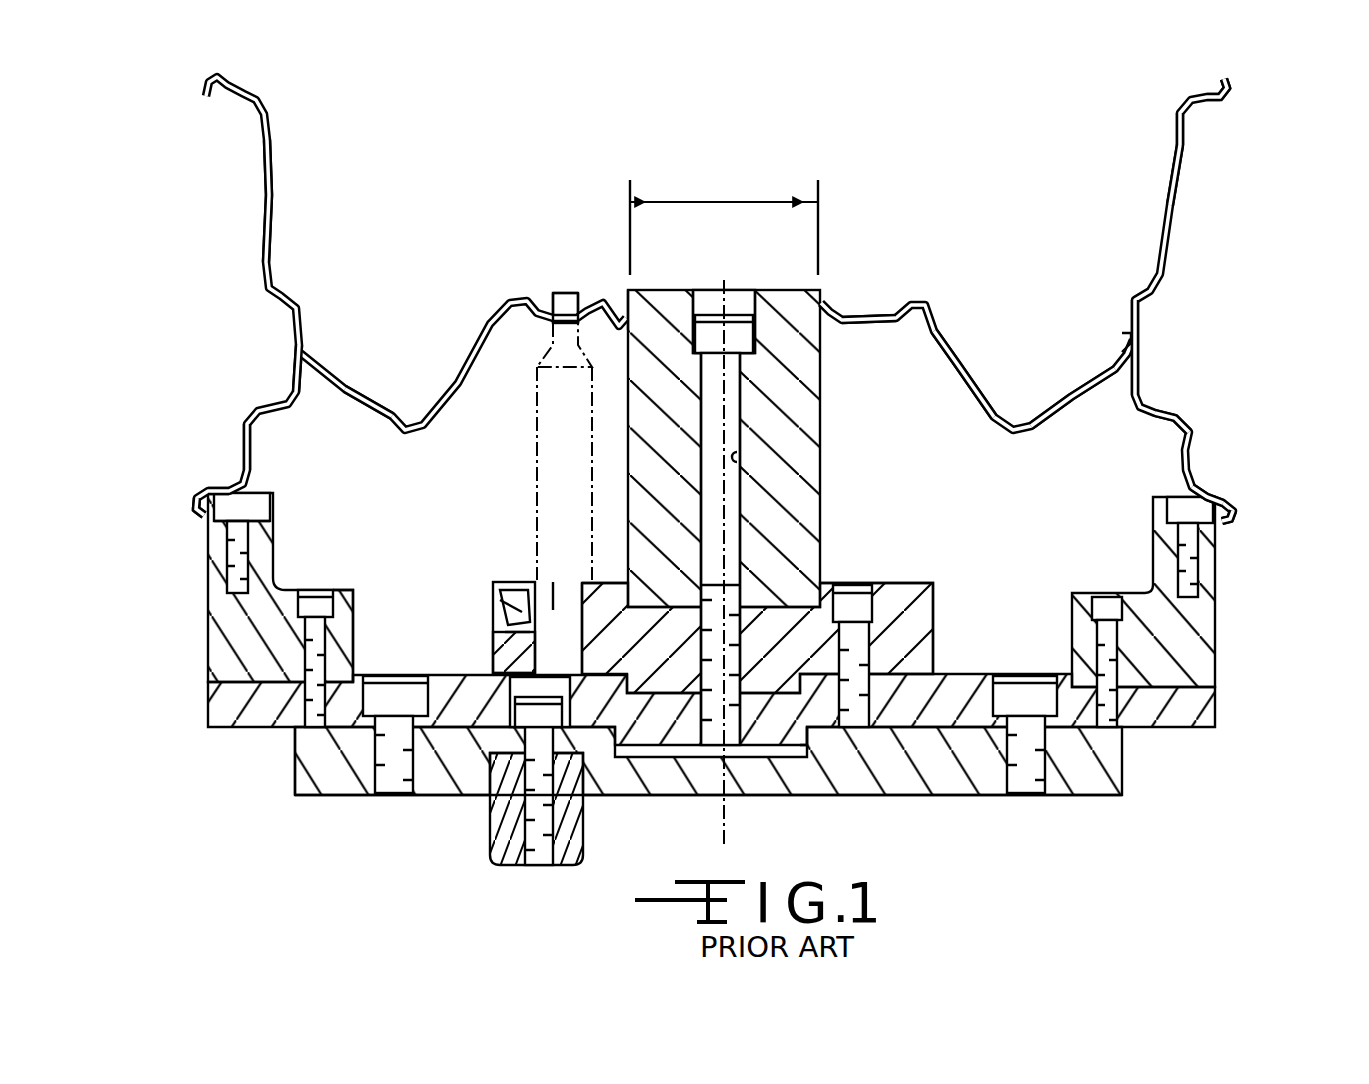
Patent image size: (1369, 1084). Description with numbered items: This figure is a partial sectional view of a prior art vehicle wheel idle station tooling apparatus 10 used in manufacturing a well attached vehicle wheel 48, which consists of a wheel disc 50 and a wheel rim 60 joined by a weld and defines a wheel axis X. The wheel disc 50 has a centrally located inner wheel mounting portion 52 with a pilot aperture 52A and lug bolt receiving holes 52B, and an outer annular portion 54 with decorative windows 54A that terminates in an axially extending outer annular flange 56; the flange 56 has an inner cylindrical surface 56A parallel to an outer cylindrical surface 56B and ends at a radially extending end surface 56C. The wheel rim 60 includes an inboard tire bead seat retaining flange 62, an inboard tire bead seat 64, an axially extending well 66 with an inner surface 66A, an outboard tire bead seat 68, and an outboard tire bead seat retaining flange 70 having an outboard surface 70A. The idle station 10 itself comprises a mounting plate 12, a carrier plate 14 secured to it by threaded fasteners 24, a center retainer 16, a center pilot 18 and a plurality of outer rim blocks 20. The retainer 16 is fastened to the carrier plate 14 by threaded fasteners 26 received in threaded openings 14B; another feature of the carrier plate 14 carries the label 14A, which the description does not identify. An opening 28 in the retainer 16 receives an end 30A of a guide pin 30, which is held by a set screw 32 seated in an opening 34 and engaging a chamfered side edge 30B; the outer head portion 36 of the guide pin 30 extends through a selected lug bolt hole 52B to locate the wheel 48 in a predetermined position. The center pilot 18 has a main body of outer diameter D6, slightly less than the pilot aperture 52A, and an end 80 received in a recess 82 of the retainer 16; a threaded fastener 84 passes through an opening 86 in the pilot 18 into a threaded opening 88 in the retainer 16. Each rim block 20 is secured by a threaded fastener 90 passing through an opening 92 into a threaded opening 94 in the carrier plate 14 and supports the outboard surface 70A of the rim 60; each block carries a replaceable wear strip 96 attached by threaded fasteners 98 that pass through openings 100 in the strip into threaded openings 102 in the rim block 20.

The vehicle wheel idle station tooling apparatus 10 is at (966, 842).
The mounting plate 12 is at (1083, 797).
The carrier plate 14 is at (1172, 722).
The mounting plate bolt and nut 14A is at (622, 745).
The threaded openings 14B is at (827, 722).
The center retainer 16 is at (927, 622).
The center pilot 18 is at (803, 483).
The outer rim blocks 20 is at (225, 660).
The threaded fasteners 24 is at (403, 692).
The threaded fasteners 26 is at (873, 600).
The opening 28 is at (553, 610).
The guide pin 30 is at (557, 463).
The end of guide pin 30A is at (525, 638).
The chamfered side edge 30B is at (520, 597).
The set screw 32 is at (500, 620).
The opening 34 is at (512, 640).
The outer head portion 36 is at (552, 290).
The vehicle wheel 48 is at (1208, 382).
The wheel disc 50 is at (974, 367).
The inner wheel mounting portion 52 is at (877, 315).
The pilot aperture 52A is at (632, 318).
The lug bolt receiving holes 52B is at (567, 295).
The outer annular portion 54 is at (1014, 434).
The decorative windows 54A is at (340, 382).
The outer annular flange 56 is at (1120, 362).
The inner axially extending cylindrical surface 56A is at (320, 334).
The outer axially extending cylindrical surface 56B is at (303, 340).
The radially extending end surface 56C is at (305, 340).
The wheel rim 60 is at (1192, 226).
The inboard tire bead seat retaining flange 62 is at (1225, 92).
The inboard tire bead seat 64 is at (1185, 145).
The well 66 is at (1155, 300).
The inner surface 66A is at (1122, 344).
The outboard tire bead seat 68 is at (1197, 457).
The outboard tire bead seat retaining flange 70 is at (1232, 510).
The outboard surface 70A is at (1228, 522).
The end of center pilot 80 is at (787, 613).
The recess 82 is at (660, 605).
The threaded fastener 84 is at (738, 330).
The opening 86 is at (740, 465).
The threaded opening 88 is at (728, 750).
The threaded fastener 90 is at (312, 636).
The openings 92 is at (320, 626).
The threaded openings 94 is at (295, 700).
The replaceable wear strip 96 is at (255, 516).
The threaded fasteners 98 is at (255, 506).
The openings 100 is at (243, 518).
The threaded openings 102 is at (235, 565).
The outer diameter D6 is at (712, 207).
The wheel axis X is at (727, 378).